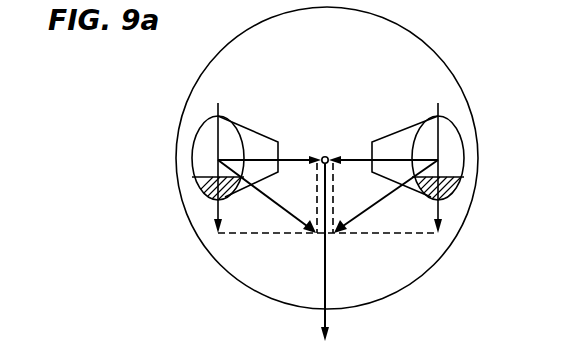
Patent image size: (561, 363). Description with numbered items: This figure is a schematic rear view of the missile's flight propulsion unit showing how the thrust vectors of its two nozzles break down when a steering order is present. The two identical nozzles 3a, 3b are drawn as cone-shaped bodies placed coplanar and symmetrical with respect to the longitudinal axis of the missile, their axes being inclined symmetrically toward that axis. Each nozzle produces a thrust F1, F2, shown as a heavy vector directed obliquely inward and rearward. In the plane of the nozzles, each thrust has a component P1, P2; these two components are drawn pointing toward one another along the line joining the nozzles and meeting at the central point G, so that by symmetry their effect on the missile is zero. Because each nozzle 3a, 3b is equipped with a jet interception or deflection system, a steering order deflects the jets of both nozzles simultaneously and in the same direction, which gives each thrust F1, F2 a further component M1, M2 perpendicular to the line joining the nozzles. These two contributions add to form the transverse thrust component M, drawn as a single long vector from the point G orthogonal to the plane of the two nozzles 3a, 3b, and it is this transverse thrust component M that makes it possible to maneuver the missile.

The nozzle 3a is at (453, 145).
The nozzle 3b is at (202, 152).
The thrust component P1 is at (269, 143).
The thrust component P2 is at (383, 143).
The center of gravity G is at (325, 148).
The transverse thrust component M is at (333, 253).
The transverse thrust component M1 is at (227, 240).
The transverse thrust component M2 is at (425, 240).
The thrust F1 is at (267, 211).
The thrust F2 is at (384, 211).